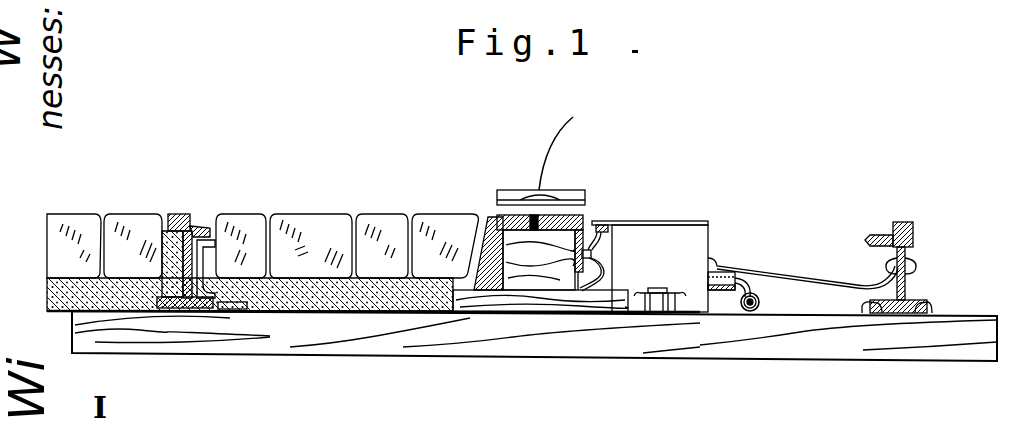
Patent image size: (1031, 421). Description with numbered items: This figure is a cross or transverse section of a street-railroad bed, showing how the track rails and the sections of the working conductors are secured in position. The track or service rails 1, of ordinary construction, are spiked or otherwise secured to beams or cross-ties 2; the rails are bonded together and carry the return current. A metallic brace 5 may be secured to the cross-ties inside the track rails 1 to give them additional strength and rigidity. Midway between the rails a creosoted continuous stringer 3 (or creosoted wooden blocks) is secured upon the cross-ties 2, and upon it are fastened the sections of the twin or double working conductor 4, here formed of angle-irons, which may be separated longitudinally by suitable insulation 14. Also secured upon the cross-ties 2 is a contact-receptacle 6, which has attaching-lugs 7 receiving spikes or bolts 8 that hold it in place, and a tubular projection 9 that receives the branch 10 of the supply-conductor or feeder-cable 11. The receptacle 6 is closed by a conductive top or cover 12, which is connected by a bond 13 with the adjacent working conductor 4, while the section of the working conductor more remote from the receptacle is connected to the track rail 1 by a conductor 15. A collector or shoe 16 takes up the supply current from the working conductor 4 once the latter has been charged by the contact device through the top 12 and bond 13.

The track or service rails 1 is at (547, 252).
The cross-ties 2 is at (534, 336).
The stringer 3 is at (540, 264).
The working conductor 4 is at (497, 215).
The metallic brace 5 is at (206, 269).
The contact-receptacle 6 is at (660, 268).
The attaching-lugs 7 is at (679, 298).
The spikes or bolts 8 is at (659, 289).
The tubular projection 9 is at (721, 292).
The branch 10 is at (756, 285).
The feeder-cable 11 is at (762, 301).
The top or cover 12 is at (650, 212).
The bond 13 is at (605, 252).
The insulation 14 is at (556, 199).
The conductor 15 is at (803, 273).
The collector or shoe 16 is at (557, 153).